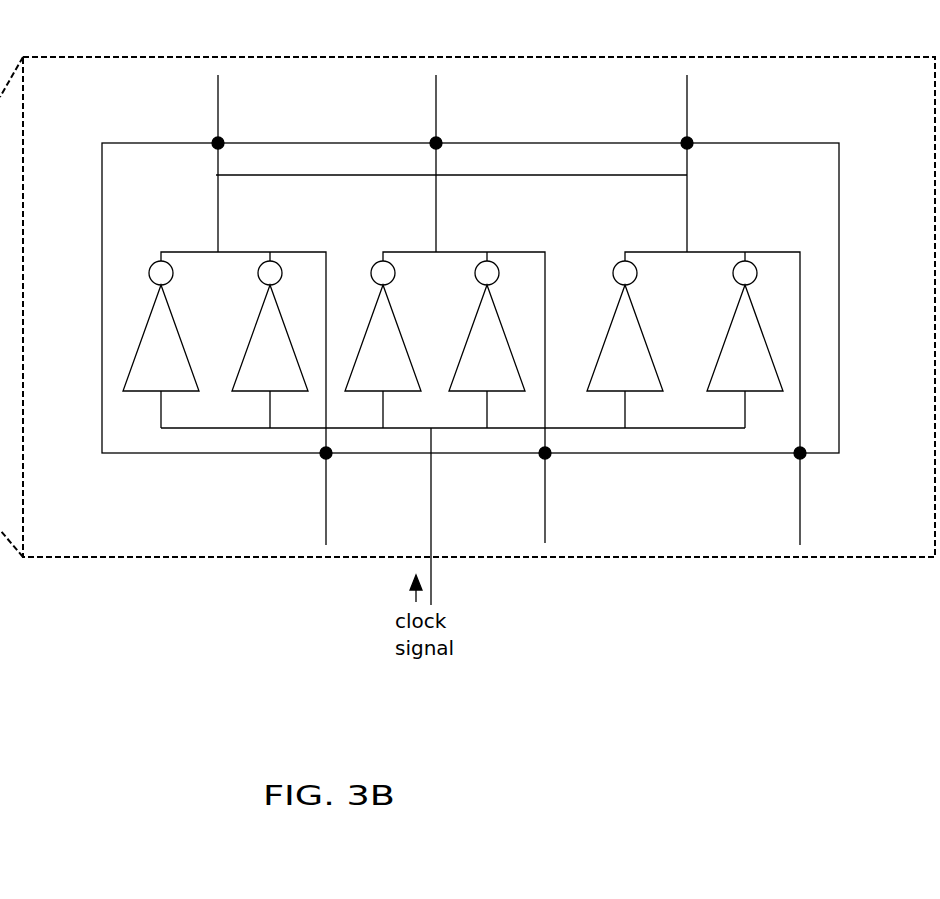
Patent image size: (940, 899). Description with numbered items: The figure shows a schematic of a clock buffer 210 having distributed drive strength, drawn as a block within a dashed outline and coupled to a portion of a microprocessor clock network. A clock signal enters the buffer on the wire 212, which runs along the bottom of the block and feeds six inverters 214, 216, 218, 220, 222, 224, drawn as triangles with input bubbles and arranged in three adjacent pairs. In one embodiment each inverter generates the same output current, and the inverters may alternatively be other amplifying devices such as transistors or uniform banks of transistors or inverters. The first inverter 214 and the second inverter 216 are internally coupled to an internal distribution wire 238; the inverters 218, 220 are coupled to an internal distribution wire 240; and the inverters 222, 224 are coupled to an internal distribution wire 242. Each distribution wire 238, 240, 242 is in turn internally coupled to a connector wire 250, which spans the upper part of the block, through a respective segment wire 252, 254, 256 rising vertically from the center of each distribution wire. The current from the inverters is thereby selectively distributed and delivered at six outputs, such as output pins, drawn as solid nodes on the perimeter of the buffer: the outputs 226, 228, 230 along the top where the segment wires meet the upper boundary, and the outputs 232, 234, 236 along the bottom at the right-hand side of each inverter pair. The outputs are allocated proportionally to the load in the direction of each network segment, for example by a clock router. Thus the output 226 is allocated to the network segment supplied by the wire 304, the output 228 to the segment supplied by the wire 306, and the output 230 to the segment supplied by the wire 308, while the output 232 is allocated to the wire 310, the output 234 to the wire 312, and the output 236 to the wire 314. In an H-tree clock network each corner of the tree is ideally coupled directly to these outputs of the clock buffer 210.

The clock buffer 210 is at (828, 183).
The wire 212 is at (215, 428).
The inverter 214 is at (142, 383).
The inverter 216 is at (251, 383).
The inverter 218 is at (364, 383).
The inverter 220 is at (468, 383).
The inverter 222 is at (606, 383).
The inverter 224 is at (726, 383).
The output 226 is at (222, 140).
The output 228 is at (440, 137).
The output 230 is at (692, 140).
The output 232 is at (317, 455).
The output 234 is at (542, 458).
The output 236 is at (795, 460).
The internal distribution wire 238 is at (238, 248).
The internal distribution wire 240 is at (463, 250).
The internal distribution wire 242 is at (720, 250).
The connector wire 250 is at (512, 173).
The segment wire 252 is at (220, 198).
The segment wire 254 is at (435, 198).
The segment wire 256 is at (687, 197).
The wire 304 is at (223, 112).
The wire 306 is at (438, 117).
The wire 308 is at (691, 118).
The wire 310 is at (325, 483).
The wire 312 is at (542, 480).
The wire 314 is at (798, 483).